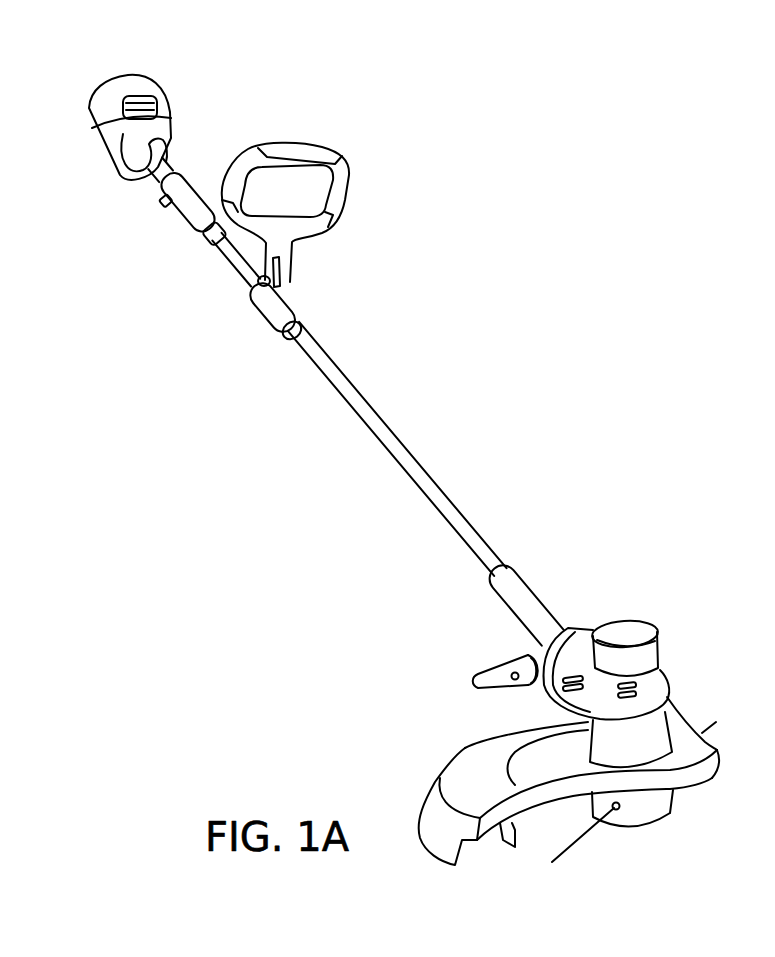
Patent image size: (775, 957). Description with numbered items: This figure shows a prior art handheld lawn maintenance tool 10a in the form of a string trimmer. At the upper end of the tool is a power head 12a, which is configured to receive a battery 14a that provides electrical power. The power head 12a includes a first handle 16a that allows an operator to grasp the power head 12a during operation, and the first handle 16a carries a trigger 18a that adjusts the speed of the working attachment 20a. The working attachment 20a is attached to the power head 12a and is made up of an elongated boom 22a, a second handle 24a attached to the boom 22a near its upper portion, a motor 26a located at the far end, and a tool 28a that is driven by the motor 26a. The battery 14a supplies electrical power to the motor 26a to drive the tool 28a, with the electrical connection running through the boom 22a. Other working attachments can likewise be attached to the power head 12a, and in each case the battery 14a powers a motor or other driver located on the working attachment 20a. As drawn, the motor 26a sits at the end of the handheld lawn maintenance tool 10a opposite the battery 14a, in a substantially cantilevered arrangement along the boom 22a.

The handheld lawn maintenance tool 10a is at (286, 490).
The power head 12a is at (108, 114).
The battery 14a is at (142, 82).
The first handle 16a is at (145, 170).
The trigger 18a is at (163, 210).
The working attachment 20a is at (458, 494).
The boom 22a is at (373, 407).
The second handle 24a is at (350, 196).
The motor 26a is at (650, 650).
The tool 28a is at (650, 832).